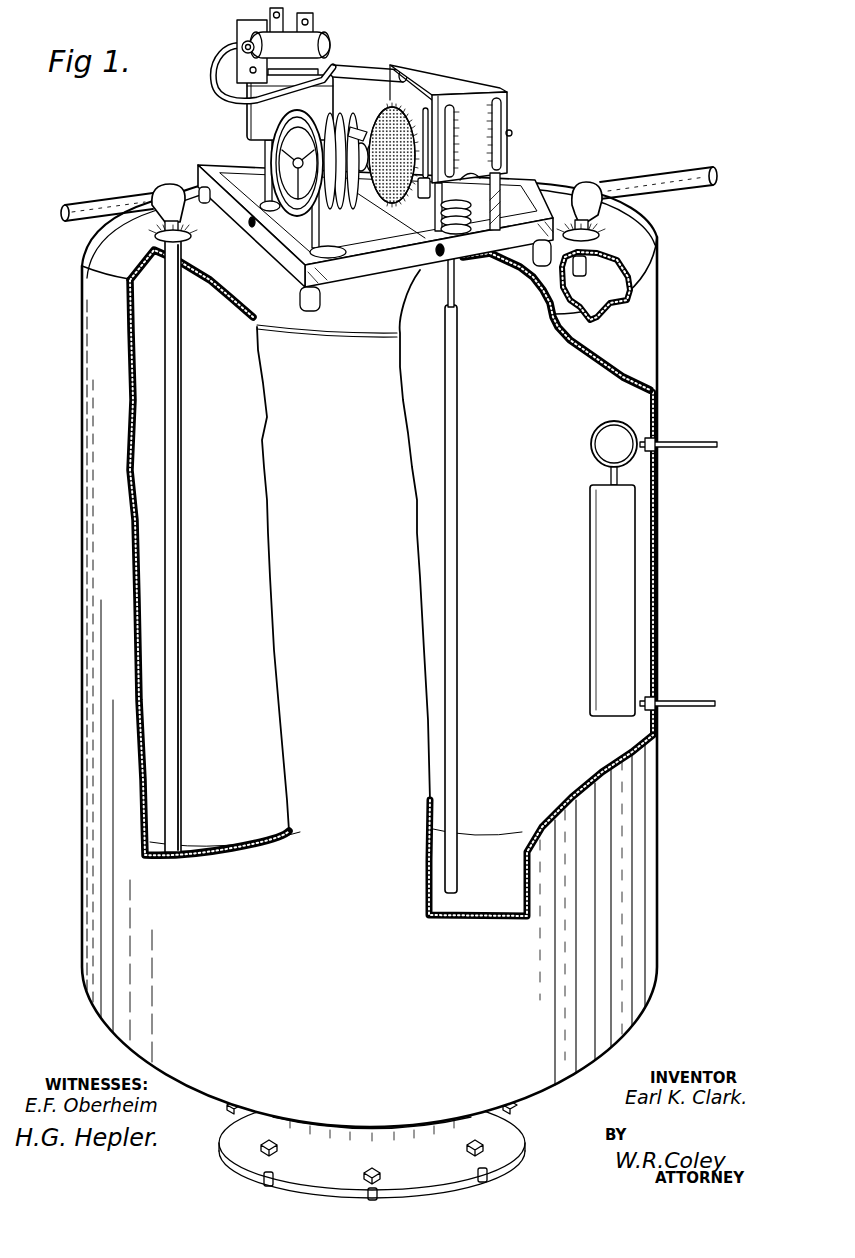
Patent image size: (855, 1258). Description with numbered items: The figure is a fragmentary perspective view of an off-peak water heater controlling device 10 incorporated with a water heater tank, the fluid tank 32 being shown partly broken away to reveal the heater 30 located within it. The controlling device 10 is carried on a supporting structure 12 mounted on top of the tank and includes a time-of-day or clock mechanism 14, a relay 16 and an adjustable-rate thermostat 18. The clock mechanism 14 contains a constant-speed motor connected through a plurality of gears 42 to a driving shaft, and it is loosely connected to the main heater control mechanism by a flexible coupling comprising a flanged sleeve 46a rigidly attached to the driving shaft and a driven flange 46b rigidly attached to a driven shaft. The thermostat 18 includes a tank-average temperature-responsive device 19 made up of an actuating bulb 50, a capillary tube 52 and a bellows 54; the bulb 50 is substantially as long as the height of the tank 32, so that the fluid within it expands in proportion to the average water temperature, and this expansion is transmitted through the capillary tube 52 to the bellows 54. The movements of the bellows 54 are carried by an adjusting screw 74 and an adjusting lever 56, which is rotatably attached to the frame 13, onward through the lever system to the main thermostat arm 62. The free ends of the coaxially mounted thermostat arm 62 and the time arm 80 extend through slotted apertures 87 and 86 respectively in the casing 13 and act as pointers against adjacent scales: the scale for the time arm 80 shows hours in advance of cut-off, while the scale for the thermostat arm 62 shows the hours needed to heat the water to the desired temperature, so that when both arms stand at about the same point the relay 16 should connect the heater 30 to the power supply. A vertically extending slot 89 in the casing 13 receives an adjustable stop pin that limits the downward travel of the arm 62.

The off-peak water heater controlling device 10 is at (355, 159).
The supporting structure 12 is at (200, 174).
The frame 13 is at (433, 220).
The time-of-day or clock mechanism 14 is at (247, 136).
The relay 16 is at (245, 108).
The adjustable-rate thermostat 18 is at (328, 66).
The tank-average temperature-responsive device 19 is at (458, 301).
The heater 30 is at (597, 598).
The fluid tank 32 is at (657, 825).
The gears 42 is at (340, 188).
The flanged sleeve 46a is at (378, 203).
The driven flange 46b is at (358, 134).
The actuating bulb 50 is at (458, 413).
The capillary tube 52 is at (458, 285).
The bellows 54 is at (462, 252).
The adjusting lever 56 is at (440, 228).
The main thermostat arm 62 is at (357, 77).
The adjusting screw 74 is at (447, 190).
The time arm 80 is at (467, 107).
The slotted aperture 86 is at (497, 130).
The slotted aperture 87 is at (452, 158).
The vertically extending slot 89 is at (436, 192).